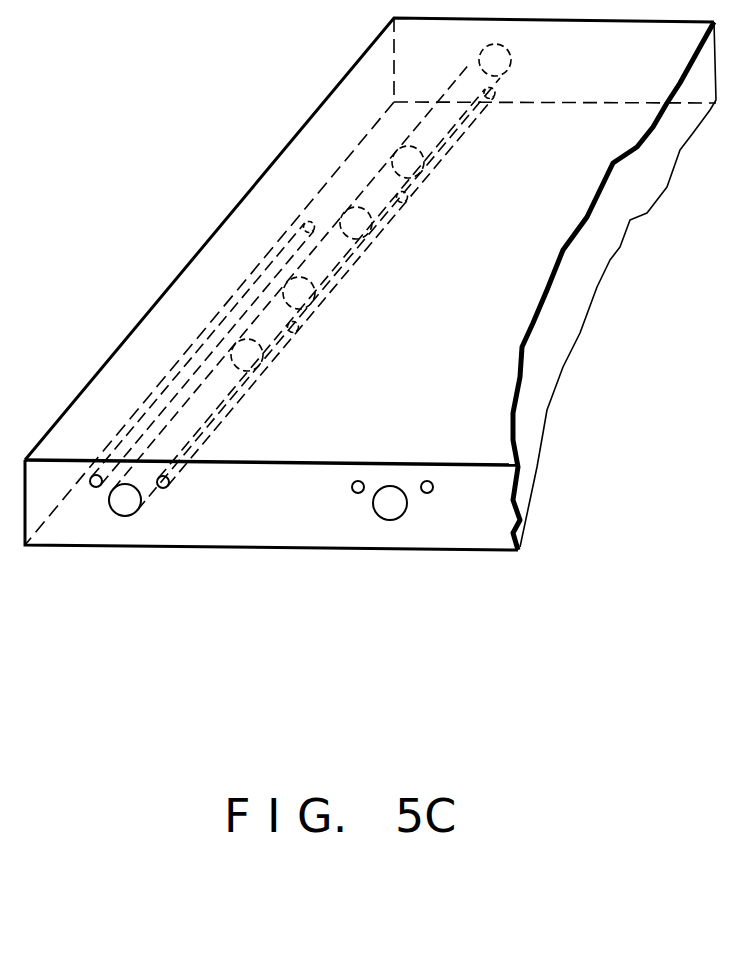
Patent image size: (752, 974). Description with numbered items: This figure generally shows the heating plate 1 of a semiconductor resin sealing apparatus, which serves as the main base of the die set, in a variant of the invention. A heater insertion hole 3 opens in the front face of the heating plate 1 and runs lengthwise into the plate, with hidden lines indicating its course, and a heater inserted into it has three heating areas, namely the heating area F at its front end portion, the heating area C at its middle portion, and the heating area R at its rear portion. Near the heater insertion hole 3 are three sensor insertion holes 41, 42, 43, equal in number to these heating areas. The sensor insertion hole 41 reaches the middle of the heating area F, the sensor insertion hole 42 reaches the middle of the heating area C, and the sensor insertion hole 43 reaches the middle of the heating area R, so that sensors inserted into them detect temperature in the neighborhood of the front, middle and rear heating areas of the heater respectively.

The heating plate 1 is at (568, 211).
The heater insertion hole 3 is at (125, 516).
The sensor insertion hole 41 is at (504, 84).
The sensor insertion hole 42 is at (94, 487).
The sensor insertion hole 43 is at (169, 484).
The heating area of the rear portion of the heater R is at (273, 323).
The heating area of the middle portion of the heater C is at (330, 253).
The heating area of the front end portion of the heater F is at (385, 191).